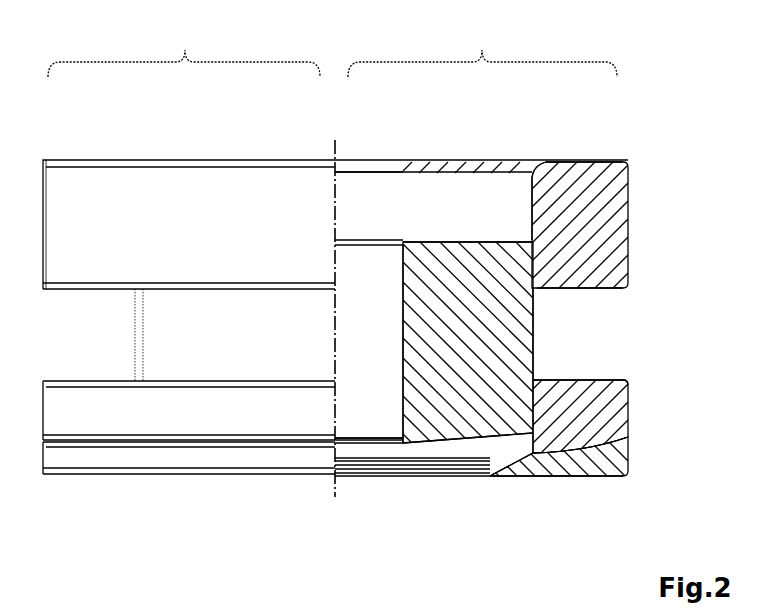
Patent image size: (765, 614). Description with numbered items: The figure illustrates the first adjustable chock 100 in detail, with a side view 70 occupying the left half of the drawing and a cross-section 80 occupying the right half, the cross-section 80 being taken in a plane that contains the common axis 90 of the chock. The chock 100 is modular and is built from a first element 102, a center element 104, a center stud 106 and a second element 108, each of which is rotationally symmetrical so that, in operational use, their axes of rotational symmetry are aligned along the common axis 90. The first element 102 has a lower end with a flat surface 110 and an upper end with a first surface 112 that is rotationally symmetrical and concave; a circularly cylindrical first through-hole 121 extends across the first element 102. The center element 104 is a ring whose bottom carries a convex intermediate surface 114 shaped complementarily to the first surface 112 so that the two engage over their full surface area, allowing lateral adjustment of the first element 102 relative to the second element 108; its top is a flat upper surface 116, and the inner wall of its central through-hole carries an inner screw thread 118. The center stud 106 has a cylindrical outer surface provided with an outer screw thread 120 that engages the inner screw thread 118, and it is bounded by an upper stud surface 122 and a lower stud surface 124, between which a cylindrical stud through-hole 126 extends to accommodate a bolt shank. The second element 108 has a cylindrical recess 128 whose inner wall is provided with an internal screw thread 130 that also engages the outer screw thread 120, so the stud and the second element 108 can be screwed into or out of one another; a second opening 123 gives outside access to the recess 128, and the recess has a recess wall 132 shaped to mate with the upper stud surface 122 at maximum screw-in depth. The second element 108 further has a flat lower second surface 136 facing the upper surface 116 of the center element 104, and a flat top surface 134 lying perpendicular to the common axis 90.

The side view 70 is at (184, 51).
The cross-section 80 is at (482, 51).
The common axis 90 is at (334, 139).
The first adjustable chock 100 is at (335, 350).
The first element 102 is at (603, 460).
The center element 104 is at (602, 412).
The center stud 106 is at (517, 332).
The second element 108 is at (590, 238).
The flat surface 110 is at (573, 480).
The first surface 112 is at (551, 461).
The intermediate surface 114 is at (590, 443).
The upper surface 116 is at (580, 377).
The inner screw thread 118 is at (524, 448).
The outer screw thread 120 is at (538, 322).
The first through-hole 121 is at (368, 475).
The upper stud surface 122 is at (428, 238).
The second opening 123 is at (349, 176).
The lower stud surface 124 is at (426, 446).
The stud through-hole 126 is at (369, 344).
The cylindrical recess 128 is at (433, 208).
The internal screw thread 130 is at (524, 217).
The recess wall 132 is at (449, 179).
The top surface 134 is at (596, 157).
The lower second surface 136 is at (614, 296).